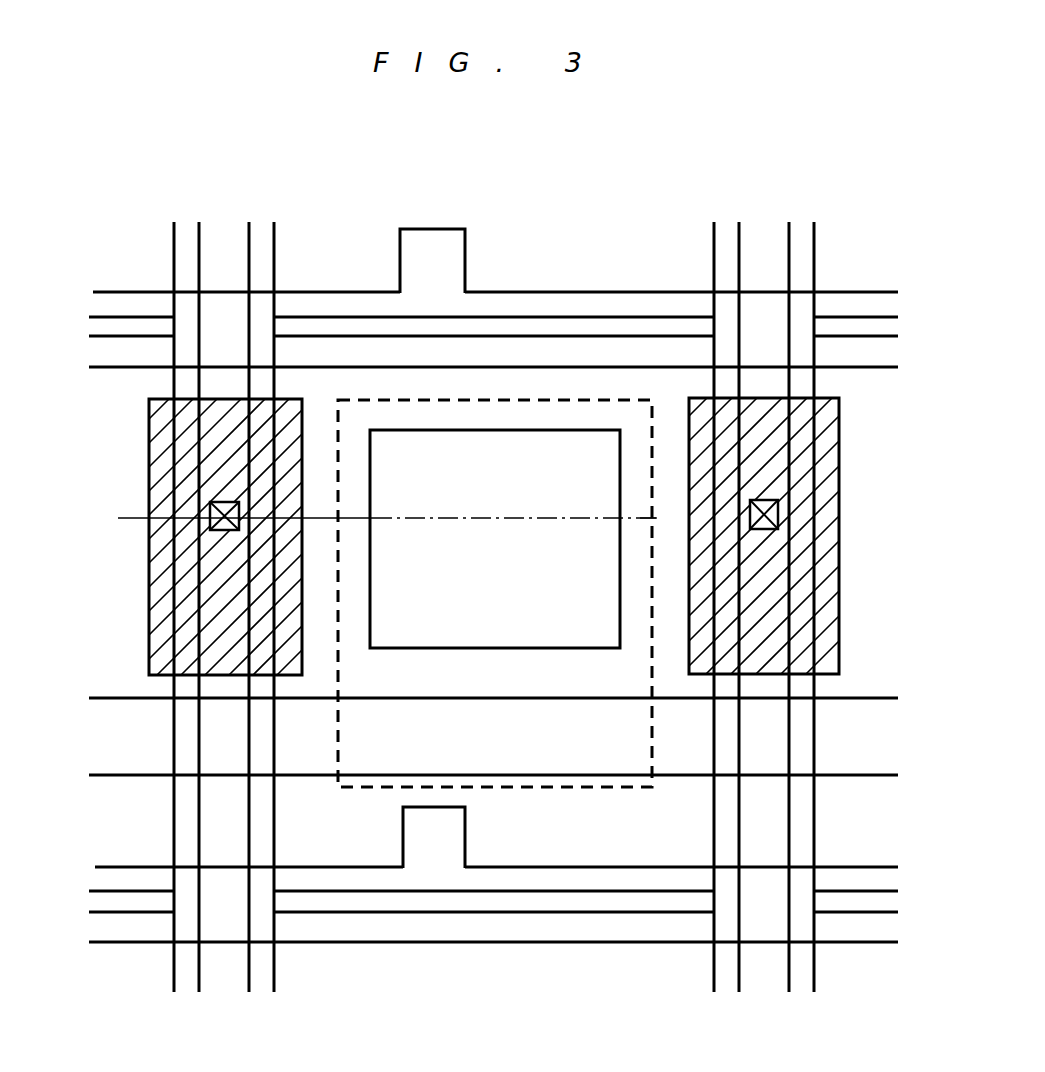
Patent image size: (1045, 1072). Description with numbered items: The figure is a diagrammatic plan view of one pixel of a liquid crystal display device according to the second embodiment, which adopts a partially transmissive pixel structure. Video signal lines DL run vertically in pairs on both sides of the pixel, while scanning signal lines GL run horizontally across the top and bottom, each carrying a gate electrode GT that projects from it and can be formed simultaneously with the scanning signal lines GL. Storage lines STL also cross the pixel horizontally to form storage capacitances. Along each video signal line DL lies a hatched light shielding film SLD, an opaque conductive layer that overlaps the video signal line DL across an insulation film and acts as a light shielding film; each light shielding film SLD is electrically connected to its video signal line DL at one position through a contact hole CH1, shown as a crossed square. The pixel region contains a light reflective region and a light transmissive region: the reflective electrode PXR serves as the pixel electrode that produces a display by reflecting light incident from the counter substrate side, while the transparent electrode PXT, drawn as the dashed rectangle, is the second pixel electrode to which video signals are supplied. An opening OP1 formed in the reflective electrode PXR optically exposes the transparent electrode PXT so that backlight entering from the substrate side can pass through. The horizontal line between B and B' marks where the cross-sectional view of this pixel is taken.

The video signal line DL is at (249, 262).
The scanning signal line GL is at (500, 292).
The gate electrode GT is at (443, 228).
The reflective electrode PXR is at (625, 336).
The storage line STL is at (860, 698).
The transparent electrode PXT is at (565, 398).
The light shielding film SLD is at (302, 598).
The opening OP1 is at (475, 648).
The contact hole CH1 is at (210, 504).
The section line B-B' end B is at (376, 522).
The section line B-B' end B' is at (662, 520).